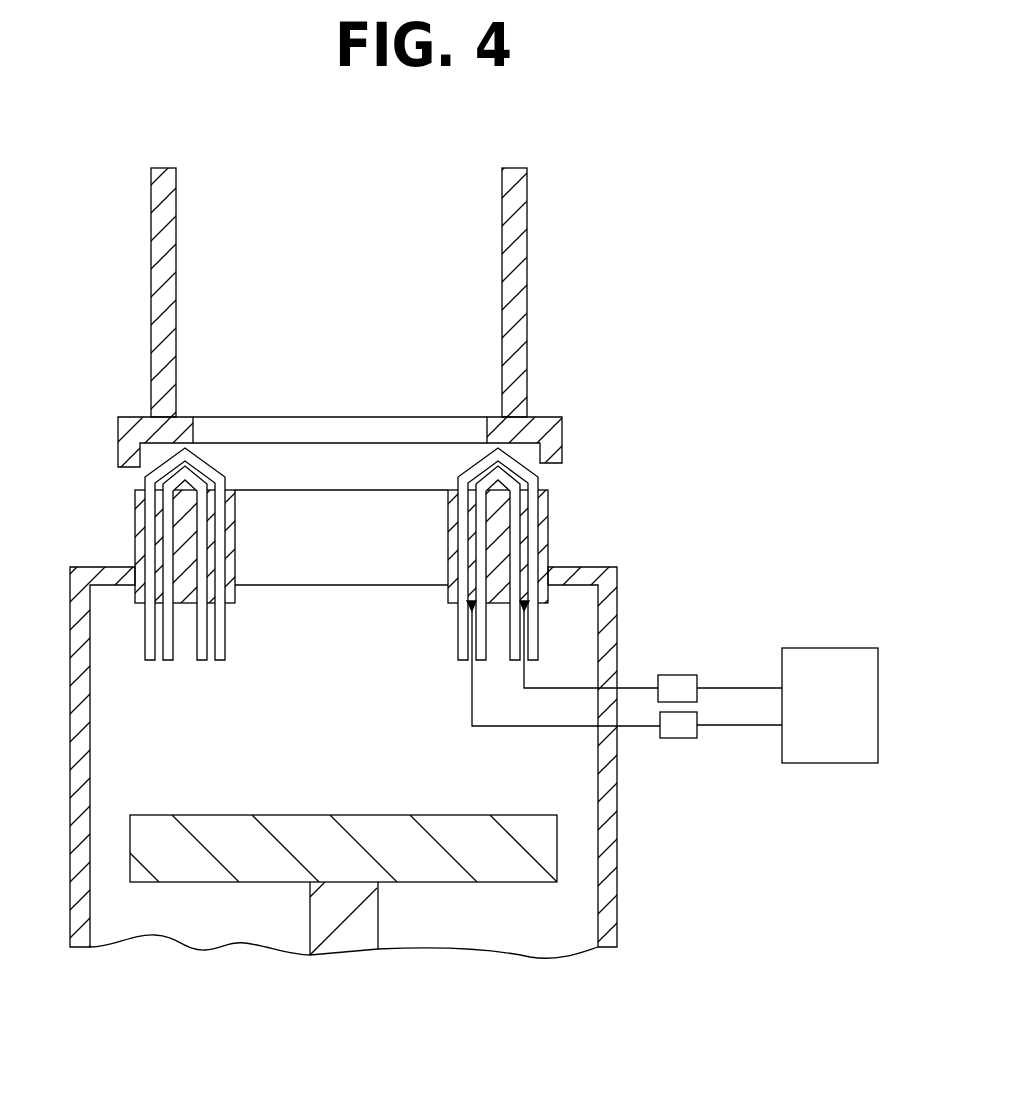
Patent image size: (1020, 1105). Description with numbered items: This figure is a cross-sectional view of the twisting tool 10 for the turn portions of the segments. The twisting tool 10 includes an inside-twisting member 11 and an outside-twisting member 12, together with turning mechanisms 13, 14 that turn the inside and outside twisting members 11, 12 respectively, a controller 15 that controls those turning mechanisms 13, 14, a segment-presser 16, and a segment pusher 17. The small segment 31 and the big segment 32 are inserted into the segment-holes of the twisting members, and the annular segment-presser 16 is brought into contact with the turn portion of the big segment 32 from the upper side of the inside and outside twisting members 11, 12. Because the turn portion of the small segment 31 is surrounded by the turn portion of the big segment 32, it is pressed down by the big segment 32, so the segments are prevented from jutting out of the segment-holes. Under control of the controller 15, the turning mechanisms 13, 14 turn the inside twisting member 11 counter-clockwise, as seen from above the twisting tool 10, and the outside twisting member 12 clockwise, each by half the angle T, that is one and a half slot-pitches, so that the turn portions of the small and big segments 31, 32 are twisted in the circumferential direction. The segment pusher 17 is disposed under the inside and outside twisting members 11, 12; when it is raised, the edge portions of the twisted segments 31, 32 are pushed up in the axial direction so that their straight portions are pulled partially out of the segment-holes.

The twisting tool 10 is at (386, 414).
The inside-twisting member 11 is at (495, 497).
The outside-twisting member 12 is at (548, 554).
The turning mechanism 13 is at (677, 682).
The turning mechanism 14 is at (673, 740).
The controller 15 is at (825, 660).
The segment-presser 16 is at (538, 428).
The segment pusher 17 is at (538, 850).
The small segment 31 is at (142, 554).
The big segment 32 is at (143, 480).